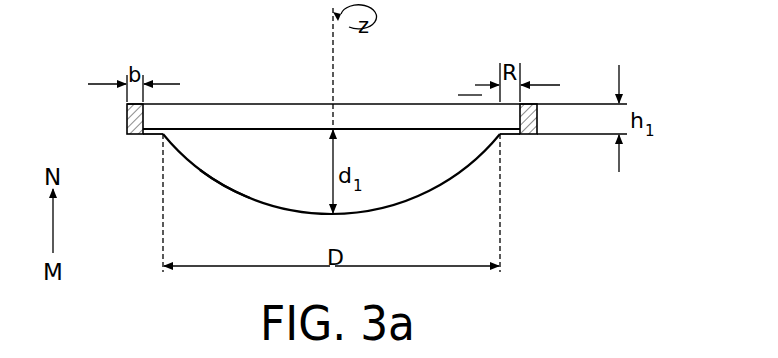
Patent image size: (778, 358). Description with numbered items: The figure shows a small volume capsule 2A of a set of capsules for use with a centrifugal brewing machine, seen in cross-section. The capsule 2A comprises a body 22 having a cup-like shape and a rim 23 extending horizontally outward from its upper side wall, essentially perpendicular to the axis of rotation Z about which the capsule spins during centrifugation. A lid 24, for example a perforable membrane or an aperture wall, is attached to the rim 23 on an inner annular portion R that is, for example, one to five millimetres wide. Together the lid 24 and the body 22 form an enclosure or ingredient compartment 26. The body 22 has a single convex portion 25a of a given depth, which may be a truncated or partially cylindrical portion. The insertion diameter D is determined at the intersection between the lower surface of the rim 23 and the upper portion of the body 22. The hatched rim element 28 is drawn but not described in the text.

The capsule 2A is at (338, 124).
The body 22 is at (425, 197).
The rim 23 is at (150, 135).
The lid 24 is at (400, 128).
The convex portion 25a is at (236, 198).
The ingredient compartment 26 is at (268, 140).
The peripheral rim 28 is at (537, 118).